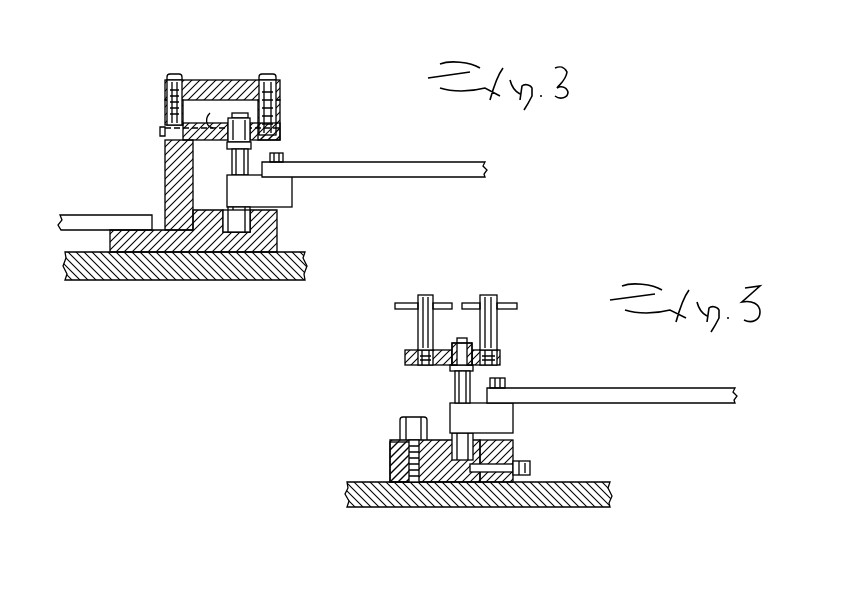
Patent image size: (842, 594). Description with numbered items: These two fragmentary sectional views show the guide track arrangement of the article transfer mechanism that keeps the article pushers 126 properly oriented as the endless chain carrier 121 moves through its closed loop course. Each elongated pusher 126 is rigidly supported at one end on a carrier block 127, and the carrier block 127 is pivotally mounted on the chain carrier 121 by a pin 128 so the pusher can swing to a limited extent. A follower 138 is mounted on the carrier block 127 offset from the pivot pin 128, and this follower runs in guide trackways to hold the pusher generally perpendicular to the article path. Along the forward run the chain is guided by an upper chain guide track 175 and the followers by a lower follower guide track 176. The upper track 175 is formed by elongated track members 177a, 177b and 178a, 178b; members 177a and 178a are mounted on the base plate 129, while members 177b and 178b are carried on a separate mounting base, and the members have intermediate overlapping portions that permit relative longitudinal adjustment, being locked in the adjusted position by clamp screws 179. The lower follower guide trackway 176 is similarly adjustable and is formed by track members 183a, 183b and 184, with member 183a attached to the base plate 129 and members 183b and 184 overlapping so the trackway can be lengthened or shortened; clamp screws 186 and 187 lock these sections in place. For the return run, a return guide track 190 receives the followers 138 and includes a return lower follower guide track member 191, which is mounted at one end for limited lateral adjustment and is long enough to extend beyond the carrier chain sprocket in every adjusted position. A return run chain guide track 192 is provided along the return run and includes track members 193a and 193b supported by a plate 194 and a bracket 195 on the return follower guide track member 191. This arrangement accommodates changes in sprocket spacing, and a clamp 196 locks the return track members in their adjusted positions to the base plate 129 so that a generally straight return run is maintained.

In FIG. 6, the endless chain carrier 121 is at (250, 118).
In FIG. 5, the endless chain carrier 121 is at (463, 346).
In FIG. 6, the article pusher 126 is at (410, 165).
In FIG. 5, the article pusher 126 is at (604, 390).
In FIG. 6, the carrier block 127 is at (290, 193).
In FIG. 5, the carrier block 127 is at (505, 415).
In FIG. 6, the pivot pin 128 is at (242, 165).
In FIG. 5, the pivot pin 128 is at (462, 386).
In FIG. 6, the base plate 129 is at (121, 270).
In FIG. 5, the base plate 129 is at (571, 497).
In FIG. 6, the follower 138 is at (265, 228).
In FIG. 5, the upper chain guide track 175 is at (453, 363).
In FIG. 5, the lower follower guide track 176 is at (450, 483).
In FIG. 5, the track member 177a is at (408, 363).
In FIG. 5, the track member 177b is at (410, 352).
In FIG. 5, the track member 178a is at (500, 360).
In FIG. 5, the track member 178b is at (500, 353).
In FIG. 5, the clamp screw 179 is at (493, 296).
In FIG. 5, the track member 183a is at (433, 478).
In FIG. 5, the track member 183b is at (410, 467).
In FIG. 5, the track member 184 is at (510, 450).
In FIG. 5, the clamp screw 186 is at (406, 427).
In FIG. 5, the clamp screw 187 is at (526, 470).
In FIG. 6, the return guide track 190 is at (245, 235).
In FIG. 6, the return lower follower guide track member 191 is at (223, 245).
In FIG. 6, the return run chain guide track 192 is at (215, 125).
In FIG. 6, the track member 193a is at (196, 143).
In FIG. 6, the track member 193b is at (280, 135).
In FIG. 6, the plate 194 is at (197, 80).
In FIG. 6, the bracket 195 is at (166, 180).
In FIG. 6, the clamp 196 is at (68, 222).